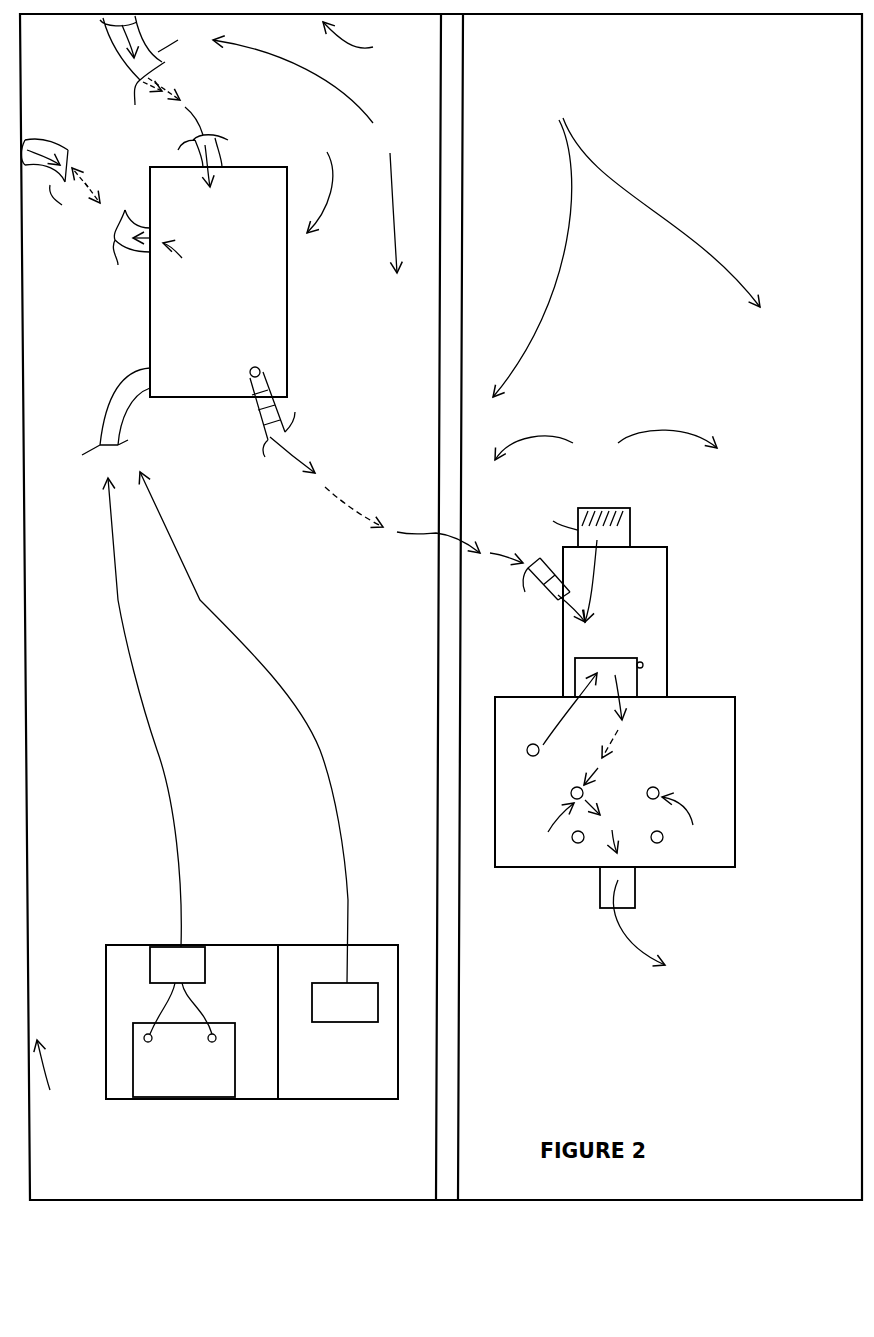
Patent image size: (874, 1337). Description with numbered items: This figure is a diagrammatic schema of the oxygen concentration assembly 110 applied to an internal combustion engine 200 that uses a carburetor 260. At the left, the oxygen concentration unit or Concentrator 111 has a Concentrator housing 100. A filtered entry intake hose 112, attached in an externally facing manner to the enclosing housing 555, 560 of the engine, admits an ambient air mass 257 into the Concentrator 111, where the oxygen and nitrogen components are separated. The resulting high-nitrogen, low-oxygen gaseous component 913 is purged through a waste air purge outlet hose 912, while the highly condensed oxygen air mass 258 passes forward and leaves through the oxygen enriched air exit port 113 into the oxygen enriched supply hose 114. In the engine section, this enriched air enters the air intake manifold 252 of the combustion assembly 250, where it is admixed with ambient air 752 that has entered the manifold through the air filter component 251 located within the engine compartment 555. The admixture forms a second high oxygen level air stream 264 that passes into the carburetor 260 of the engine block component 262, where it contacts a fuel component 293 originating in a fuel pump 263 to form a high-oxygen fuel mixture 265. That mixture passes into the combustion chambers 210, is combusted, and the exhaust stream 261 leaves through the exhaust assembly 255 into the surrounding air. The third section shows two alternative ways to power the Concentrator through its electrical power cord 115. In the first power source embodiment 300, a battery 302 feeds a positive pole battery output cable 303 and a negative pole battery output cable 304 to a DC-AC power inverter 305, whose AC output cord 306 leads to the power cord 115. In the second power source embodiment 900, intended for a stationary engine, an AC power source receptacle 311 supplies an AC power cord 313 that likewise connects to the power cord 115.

The Concentrator housing 100 is at (270, 229).
The Oxygen Concentration assembly 110 is at (307, 156).
The Oxygen Concentration Unit 111 is at (315, 181).
The filtered entry intake hose 112 is at (118, 48).
The oxygen enriched air exit port 113 is at (243, 378).
The oxygen enriched supply hose 114 is at (253, 417).
The electrical power cord 115 is at (113, 397).
The internal combustion engine 200 is at (626, 245).
The combustion chambers 210 is at (571, 837).
The combustion assembly 250 is at (606, 445).
The air filter component 251 is at (604, 547).
The air intake manifold 252 is at (646, 574).
The exhaust assembly 255 is at (638, 887).
The ambient air mass 257 is at (188, 88).
The highly condensed oxygen air mass 258 is at (357, 497).
The carburetor 260 is at (641, 668).
The exhaust stream 261 is at (617, 943).
The engine block component 262 is at (709, 764).
The fuel pump 263 is at (527, 752).
The second high oxygen level air stream 264 is at (595, 625).
The high-oxygen fuel mixture 265 is at (622, 740).
The fuel component 293 is at (570, 723).
The first power source embodiment 300 is at (260, 1080).
The battery 302 is at (201, 1086).
The positive pole battery output cable 303 is at (167, 1000).
The negative pole battery output cable 304 is at (199, 995).
The DC-AC Power Inverter 305 is at (195, 976).
The AC output cord 306 is at (177, 867).
The AC power source receptacle 311 is at (358, 1012).
The AC power cord 313 is at (348, 877).
The engine compartment 555 is at (570, 20).
The enclosing housing 560 is at (437, 87).
The ambient air entering intake manifold 752 is at (550, 518).
The second power source embodiment 900 is at (375, 1070).
The waste air purge outlet hose 912 is at (43, 138).
The high-nitrogen low-oxygen gaseous component 913 is at (102, 183).